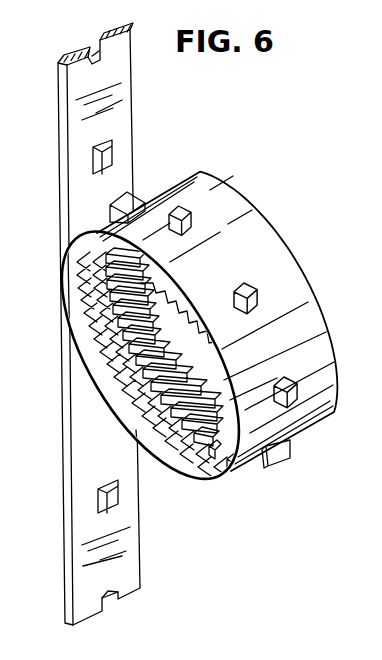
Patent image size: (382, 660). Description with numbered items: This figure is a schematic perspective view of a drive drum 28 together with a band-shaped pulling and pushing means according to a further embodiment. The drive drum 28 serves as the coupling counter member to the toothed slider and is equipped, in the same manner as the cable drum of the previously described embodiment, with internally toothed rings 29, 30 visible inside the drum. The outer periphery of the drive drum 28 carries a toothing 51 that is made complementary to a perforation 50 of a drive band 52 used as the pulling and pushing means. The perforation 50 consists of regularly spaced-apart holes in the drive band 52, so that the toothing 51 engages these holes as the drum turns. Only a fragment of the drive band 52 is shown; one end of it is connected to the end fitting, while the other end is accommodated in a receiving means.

The drive drum 28 is at (361, 277).
The internally toothed ring 29 is at (98, 345).
The internally toothed ring 30 is at (84, 302).
The perforation 50 is at (113, 152).
The toothing 51 is at (195, 212).
The drive band 52 is at (77, 569).